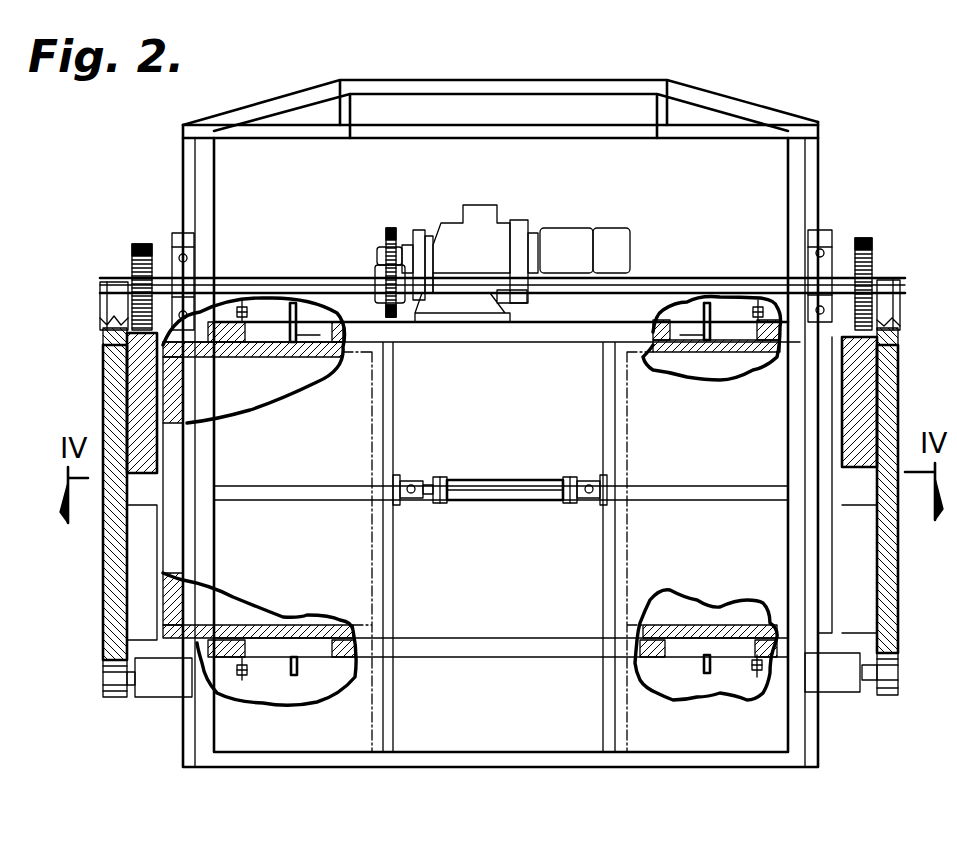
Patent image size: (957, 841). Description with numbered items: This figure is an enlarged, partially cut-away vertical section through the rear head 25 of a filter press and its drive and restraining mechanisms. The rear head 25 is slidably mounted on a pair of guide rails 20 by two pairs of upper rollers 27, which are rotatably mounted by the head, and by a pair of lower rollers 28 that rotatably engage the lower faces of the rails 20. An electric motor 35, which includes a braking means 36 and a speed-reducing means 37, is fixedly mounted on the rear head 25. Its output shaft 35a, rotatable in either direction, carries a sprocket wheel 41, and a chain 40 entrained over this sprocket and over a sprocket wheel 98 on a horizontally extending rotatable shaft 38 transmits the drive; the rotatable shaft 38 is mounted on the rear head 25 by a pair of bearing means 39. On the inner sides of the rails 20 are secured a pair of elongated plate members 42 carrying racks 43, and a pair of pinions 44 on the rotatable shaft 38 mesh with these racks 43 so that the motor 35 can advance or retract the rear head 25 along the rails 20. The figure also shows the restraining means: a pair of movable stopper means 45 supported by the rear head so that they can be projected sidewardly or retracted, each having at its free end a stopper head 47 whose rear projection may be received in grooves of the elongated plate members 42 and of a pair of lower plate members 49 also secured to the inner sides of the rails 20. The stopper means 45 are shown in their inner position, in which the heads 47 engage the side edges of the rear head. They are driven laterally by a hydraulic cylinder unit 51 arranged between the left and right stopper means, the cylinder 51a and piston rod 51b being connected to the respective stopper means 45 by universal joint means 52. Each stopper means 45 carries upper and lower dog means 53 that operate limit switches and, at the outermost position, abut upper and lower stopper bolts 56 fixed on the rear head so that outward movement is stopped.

The guide rails 20 is at (108, 553).
The rear head 25 is at (762, 106).
The upper rollers 27 is at (108, 282).
The lower rollers 28 is at (115, 683).
The electric motor 35 is at (568, 240).
The output shaft 35a is at (415, 262).
The braking means 36 is at (610, 242).
The speed-reducing means 37 is at (462, 233).
The rotatable shaft 38 is at (278, 278).
The bearing means 39 is at (172, 272).
The chain 40 is at (387, 233).
The sprocket wheel 41 is at (397, 245).
The elongated plate members 42 is at (145, 437).
The racks 43 is at (113, 338).
The pinions 44 is at (132, 248).
The movable stopper means 45 is at (257, 350).
The stopper heads 47 is at (172, 497).
The lower plate members 49 is at (147, 557).
The hydraulic cylinder unit 51 is at (478, 480).
The cylinder 51a is at (527, 490).
The piston rod 51b is at (430, 497).
The universal joint means 52 is at (417, 478).
The dog means 53 is at (293, 305).
The stopper bolts 56 is at (242, 305).
The sprocket wheel 98 is at (399, 318).